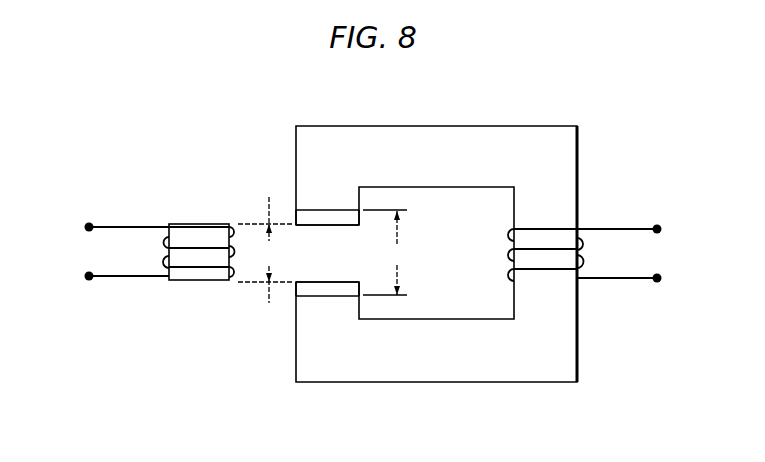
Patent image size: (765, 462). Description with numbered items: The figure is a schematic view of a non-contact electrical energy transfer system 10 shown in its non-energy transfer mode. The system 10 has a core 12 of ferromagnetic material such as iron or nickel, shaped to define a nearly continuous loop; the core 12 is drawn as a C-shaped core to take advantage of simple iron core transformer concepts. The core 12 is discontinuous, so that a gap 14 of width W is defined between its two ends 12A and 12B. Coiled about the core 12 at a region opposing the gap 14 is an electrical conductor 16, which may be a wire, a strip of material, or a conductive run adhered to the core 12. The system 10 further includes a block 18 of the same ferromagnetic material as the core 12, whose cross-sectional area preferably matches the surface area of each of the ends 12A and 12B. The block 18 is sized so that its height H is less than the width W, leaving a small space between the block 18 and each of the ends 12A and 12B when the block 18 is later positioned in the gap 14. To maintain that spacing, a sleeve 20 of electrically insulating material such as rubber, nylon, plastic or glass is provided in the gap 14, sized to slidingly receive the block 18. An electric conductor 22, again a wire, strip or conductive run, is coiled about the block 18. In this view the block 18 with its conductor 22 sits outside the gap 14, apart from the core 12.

The non-contact electrical energy transfer system 10 is at (203, 111).
The core 12 is at (434, 131).
The end of core 12A is at (322, 209).
The end of core 12B is at (322, 296).
The gap 14 is at (319, 256).
The electrical conductor 16 is at (548, 229).
The block 18 is at (200, 224).
The sleeve 20 is at (328, 217).
The electric conductor 22 is at (200, 272).